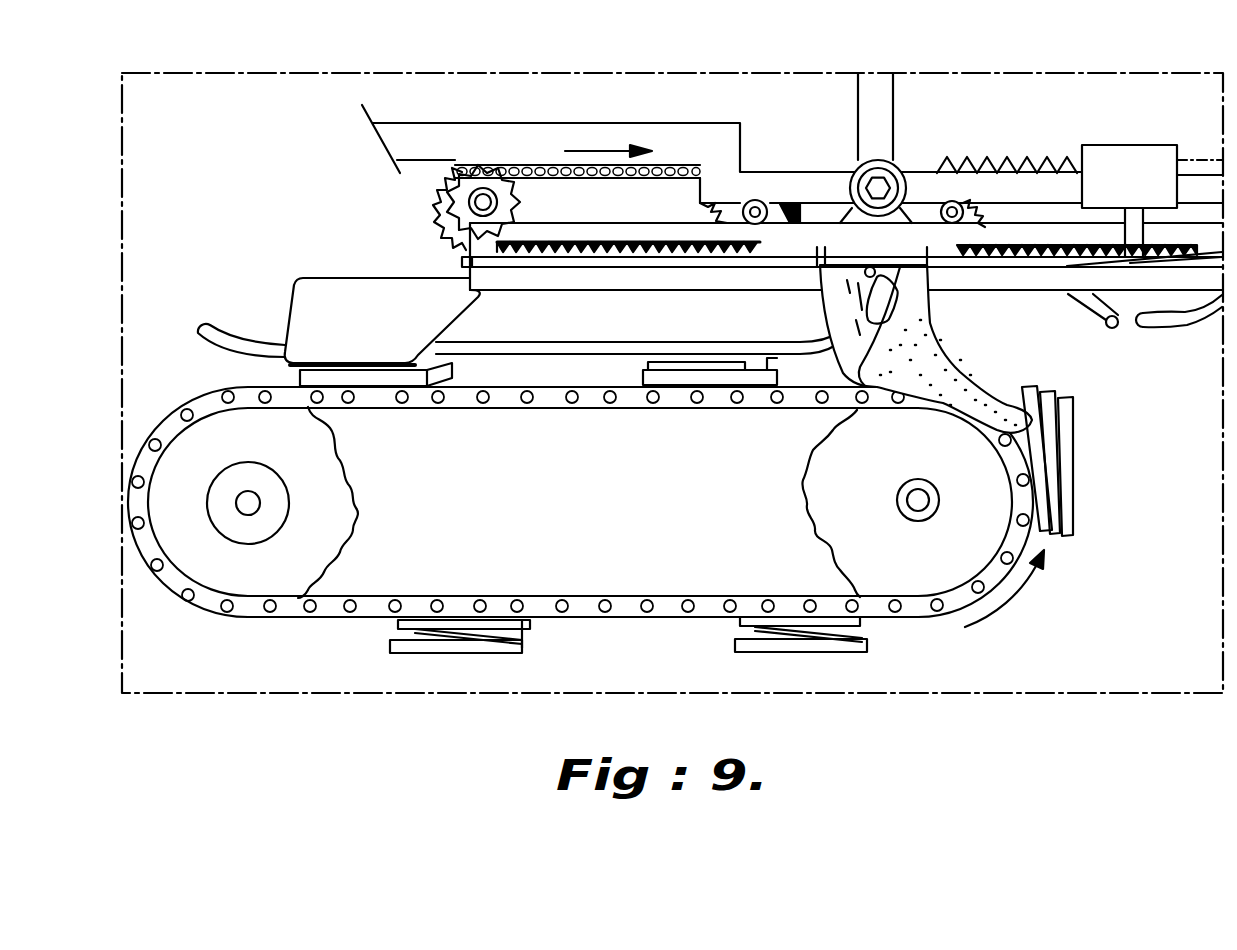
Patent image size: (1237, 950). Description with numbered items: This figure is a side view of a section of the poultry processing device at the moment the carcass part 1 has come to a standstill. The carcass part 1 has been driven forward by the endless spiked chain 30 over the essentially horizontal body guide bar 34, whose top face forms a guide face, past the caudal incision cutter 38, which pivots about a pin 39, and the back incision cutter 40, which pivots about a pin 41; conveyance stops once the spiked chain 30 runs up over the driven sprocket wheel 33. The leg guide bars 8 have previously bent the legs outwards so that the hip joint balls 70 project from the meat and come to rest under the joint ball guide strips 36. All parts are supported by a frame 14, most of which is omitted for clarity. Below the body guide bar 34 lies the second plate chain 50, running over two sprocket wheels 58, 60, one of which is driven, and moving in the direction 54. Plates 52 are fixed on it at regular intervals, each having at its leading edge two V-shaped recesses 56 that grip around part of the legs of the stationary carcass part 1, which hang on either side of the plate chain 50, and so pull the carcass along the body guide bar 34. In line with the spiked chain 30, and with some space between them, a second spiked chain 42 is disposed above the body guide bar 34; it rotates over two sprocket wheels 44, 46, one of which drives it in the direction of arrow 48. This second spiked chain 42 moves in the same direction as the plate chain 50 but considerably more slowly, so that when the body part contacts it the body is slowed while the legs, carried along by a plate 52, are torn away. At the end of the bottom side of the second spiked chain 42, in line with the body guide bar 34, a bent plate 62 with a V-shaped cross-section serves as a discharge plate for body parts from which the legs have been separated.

The carcass part 1 is at (897, 310).
The leg guide bars 8 is at (1197, 317).
The frame 14 is at (657, 233).
The spiked chain 30 is at (1017, 170).
The sprocket wheel 33 is at (968, 210).
The body guide bar 34 is at (730, 280).
The joint ball guide strips 36 is at (693, 265).
The caudal incision cutter 38 is at (1073, 262).
The pin 39 is at (1133, 217).
The back incision cutter 40 is at (1090, 302).
The pin 41 is at (1118, 328).
The second spiked chain 42 is at (437, 207).
The sprocket wheel 44 is at (735, 213).
The sprocket wheel 46 is at (483, 180).
The arrow 48 is at (585, 151).
The second plate chain 50 is at (588, 398).
The plates 52 is at (395, 378).
The direction of movement 54 is at (1005, 605).
The V-shaped recesses 56 is at (1060, 398).
The sprocket wheel 58 is at (815, 473).
The sprocket wheel 60 is at (333, 478).
The bent plate 62 is at (307, 315).
The hip joint balls 70 is at (897, 270).